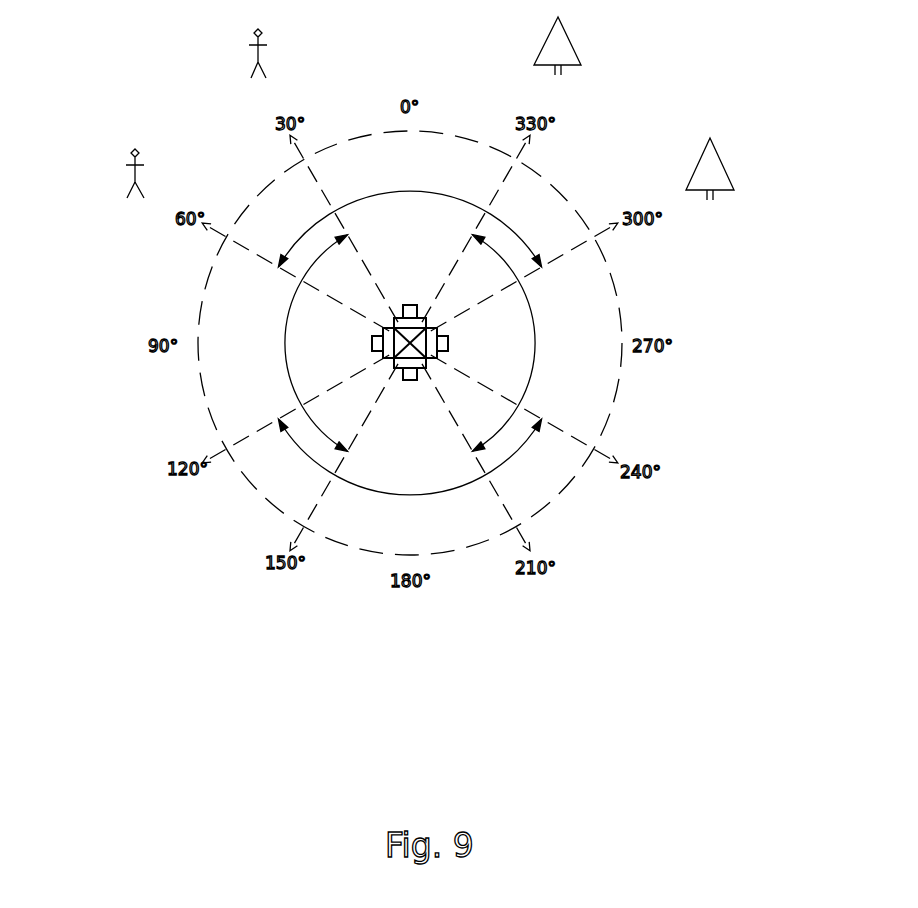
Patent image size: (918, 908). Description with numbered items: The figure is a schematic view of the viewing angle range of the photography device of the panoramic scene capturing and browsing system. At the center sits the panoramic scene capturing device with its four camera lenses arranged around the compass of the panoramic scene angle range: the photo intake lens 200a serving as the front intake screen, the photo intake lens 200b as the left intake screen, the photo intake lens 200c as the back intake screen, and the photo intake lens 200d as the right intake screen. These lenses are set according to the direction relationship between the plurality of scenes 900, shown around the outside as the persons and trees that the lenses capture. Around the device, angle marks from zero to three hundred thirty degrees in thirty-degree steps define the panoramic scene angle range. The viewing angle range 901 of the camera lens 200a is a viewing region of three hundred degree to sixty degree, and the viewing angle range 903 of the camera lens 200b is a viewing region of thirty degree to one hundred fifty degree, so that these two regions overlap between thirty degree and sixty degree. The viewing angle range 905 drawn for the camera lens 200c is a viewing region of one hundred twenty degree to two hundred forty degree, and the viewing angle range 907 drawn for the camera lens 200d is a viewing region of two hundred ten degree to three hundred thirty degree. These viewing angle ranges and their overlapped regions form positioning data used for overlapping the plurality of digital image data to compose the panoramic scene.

The scenes 900 is at (254, 28).
The viewing angle range 901 is at (400, 191).
The viewing angle range 903 is at (286, 343).
The third field of view arc 905 is at (411, 495).
The fourth field of view arc 907 is at (526, 303).
The photo intake lens 200a is at (418, 304).
The photo intake lens 200b is at (372, 339).
The photo intake lens 200c is at (411, 381).
The photo intake lens 200d is at (448, 341).